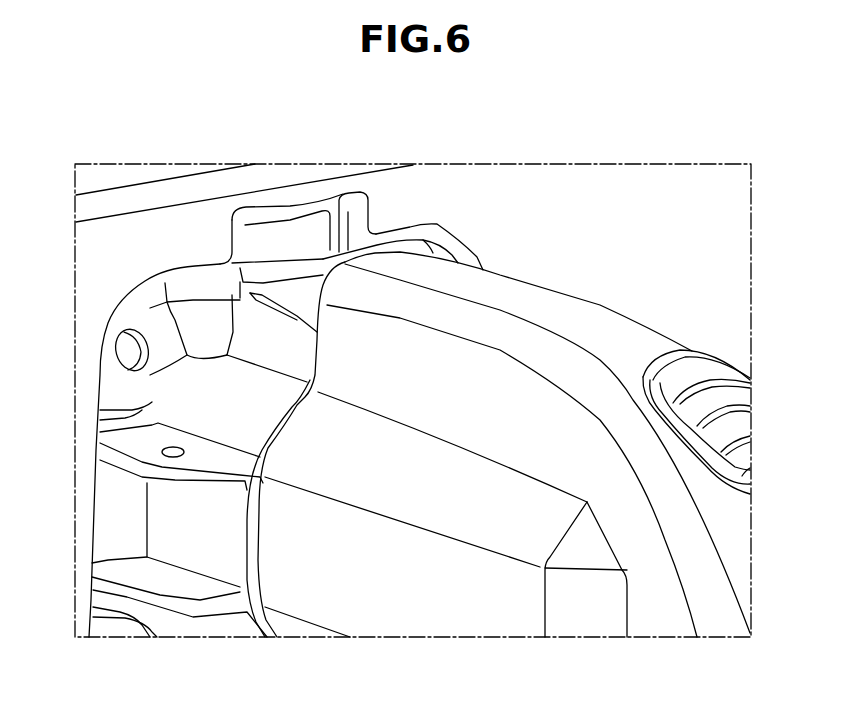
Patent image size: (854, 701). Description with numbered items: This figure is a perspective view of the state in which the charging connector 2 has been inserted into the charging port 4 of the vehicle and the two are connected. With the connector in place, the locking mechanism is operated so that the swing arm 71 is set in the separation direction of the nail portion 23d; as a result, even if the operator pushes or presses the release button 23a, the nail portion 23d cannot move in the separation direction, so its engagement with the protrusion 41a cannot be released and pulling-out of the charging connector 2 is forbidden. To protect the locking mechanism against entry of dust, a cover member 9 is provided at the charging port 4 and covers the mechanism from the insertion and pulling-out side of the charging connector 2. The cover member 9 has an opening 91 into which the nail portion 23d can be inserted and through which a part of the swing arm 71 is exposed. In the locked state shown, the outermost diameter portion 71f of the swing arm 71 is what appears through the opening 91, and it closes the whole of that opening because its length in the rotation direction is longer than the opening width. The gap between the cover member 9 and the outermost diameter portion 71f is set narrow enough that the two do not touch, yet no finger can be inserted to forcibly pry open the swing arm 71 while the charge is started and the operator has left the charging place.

The charging connector 2 is at (597, 303).
The charging port 4 is at (196, 405).
The cover member 9 is at (452, 197).
The release button 23a is at (712, 368).
The nail portion 23d is at (294, 293).
The protrusion 41a is at (130, 307).
The swing arm 71 is at (258, 222).
The outermost diameter portion 71f is at (280, 233).
The opening 91 is at (343, 222).